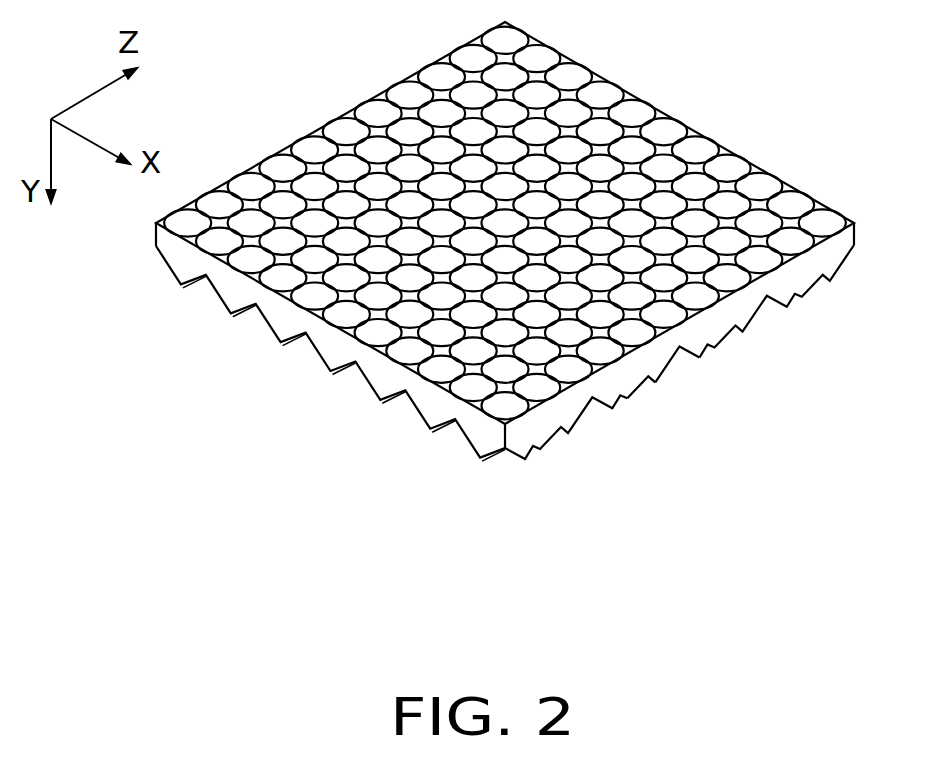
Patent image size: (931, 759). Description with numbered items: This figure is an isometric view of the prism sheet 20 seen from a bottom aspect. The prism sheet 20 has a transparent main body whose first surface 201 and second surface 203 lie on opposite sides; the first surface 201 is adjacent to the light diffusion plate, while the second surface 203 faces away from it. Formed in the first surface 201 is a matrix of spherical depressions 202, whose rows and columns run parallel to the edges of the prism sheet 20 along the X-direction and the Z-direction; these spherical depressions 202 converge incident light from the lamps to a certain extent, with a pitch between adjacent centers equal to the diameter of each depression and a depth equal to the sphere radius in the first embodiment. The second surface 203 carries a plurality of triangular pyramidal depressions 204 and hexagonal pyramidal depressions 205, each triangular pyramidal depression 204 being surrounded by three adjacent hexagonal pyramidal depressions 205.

The prism sheet 20 is at (531, 247).
The first surface 201 is at (818, 202).
The spherical depressions 202 is at (735, 168).
The second surface 203 is at (512, 360).
The triangular pyramidal depressions 204 is at (648, 377).
The hexagonal pyramidal depressions 205 is at (680, 348).